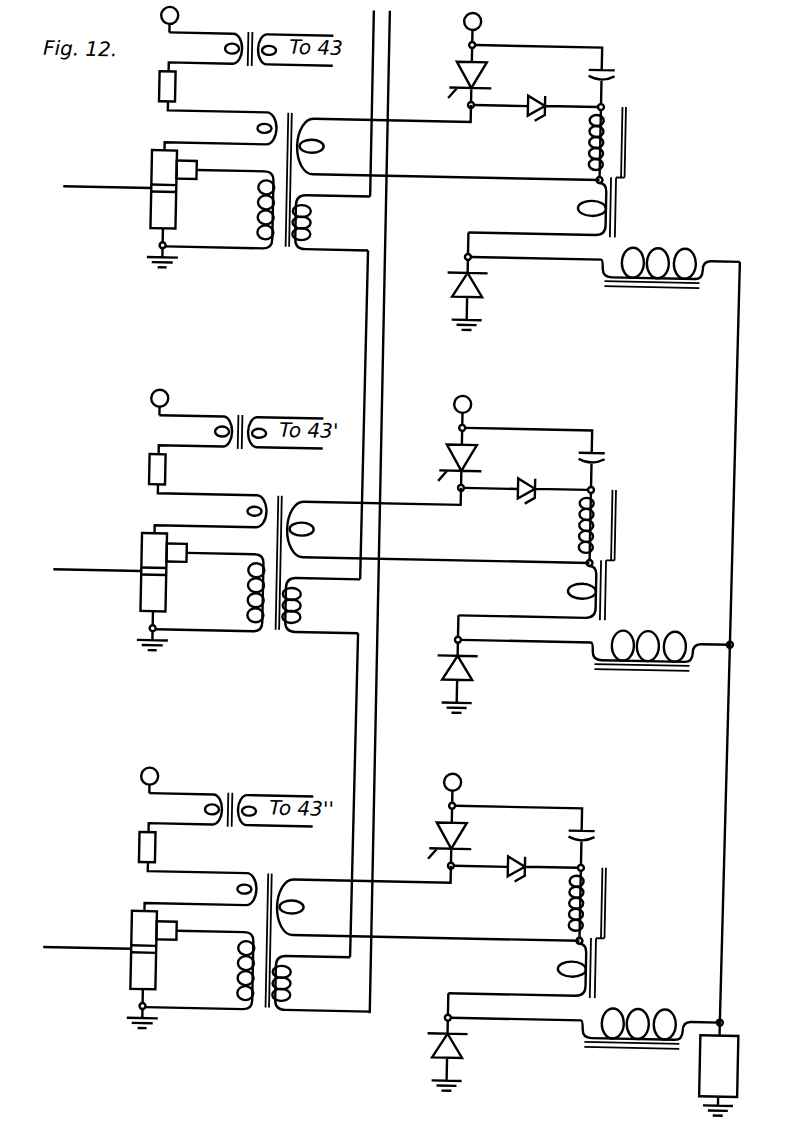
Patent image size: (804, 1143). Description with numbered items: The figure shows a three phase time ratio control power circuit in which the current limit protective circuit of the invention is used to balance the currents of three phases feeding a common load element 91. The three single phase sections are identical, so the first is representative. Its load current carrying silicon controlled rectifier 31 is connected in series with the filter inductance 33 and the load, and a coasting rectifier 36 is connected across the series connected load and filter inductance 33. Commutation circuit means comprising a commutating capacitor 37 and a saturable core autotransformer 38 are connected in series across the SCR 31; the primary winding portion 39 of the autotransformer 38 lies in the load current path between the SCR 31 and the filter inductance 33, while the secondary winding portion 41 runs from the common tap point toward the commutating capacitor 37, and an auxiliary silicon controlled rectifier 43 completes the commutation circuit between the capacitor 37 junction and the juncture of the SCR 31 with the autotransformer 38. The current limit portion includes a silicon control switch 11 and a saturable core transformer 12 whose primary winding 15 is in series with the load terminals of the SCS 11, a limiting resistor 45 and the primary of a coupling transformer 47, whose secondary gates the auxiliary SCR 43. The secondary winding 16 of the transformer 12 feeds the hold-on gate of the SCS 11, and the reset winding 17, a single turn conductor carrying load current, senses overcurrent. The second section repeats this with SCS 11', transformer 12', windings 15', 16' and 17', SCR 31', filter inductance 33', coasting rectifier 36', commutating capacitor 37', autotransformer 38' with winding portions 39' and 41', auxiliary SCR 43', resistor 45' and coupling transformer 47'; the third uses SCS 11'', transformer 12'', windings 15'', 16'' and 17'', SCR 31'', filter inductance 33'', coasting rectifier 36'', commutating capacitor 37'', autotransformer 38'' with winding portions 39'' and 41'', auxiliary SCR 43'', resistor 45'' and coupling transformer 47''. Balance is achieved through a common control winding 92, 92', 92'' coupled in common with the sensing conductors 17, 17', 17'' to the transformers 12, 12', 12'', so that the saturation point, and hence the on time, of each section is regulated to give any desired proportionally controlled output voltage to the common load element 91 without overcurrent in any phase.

The silicon control switch 11 is at (129, 207).
The saturable core transformer 12 is at (291, 164).
The primary winding 15 is at (221, 126).
The secondary winding 16 is at (220, 208).
The reset winding 17 is at (449, 141).
The load current carrying silicon controlled rectifier 31 is at (485, 61).
The filter inductance 33 is at (605, 253).
The coasting rectifier 36 is at (447, 280).
The commutating capacitor 37 is at (563, 78).
The saturable core autotransformer 38 is at (633, 172).
The primary winding portion 39 is at (537, 207).
The secondary winding portion 41 is at (578, 146).
The auxiliary silicon controlled rectifier 43 is at (535, 120).
The limiting resistor 45 is at (185, 86).
The coupling transformer 47 is at (251, 37).
The common load element 91 is at (759, 1042).
The common control winding 92 is at (331, 223).
The silicon control switch 11' is at (119, 590).
The saturable core transformer 12' is at (283, 547).
The primary winding 15' is at (211, 509).
The secondary winding 16' is at (210, 591).
The overcurrent sensing conductor 17' is at (439, 523).
The load current carrying silicon controlled rectifier 31' is at (478, 443).
The filter inductance 33' is at (596, 635).
The coasting rectifier 36' is at (437, 663).
The commutating capacitor 37' is at (555, 461).
The saturable core autotransformer 38' is at (625, 555).
The primary winding portion 39' is at (527, 590).
The secondary winding portion 41' is at (568, 529).
The auxiliary silicon controlled rectifier 43' is at (525, 502).
The limiting resistor 45' is at (178, 469).
The coupling transformer 47' is at (241, 420).
The common control winding 92' is at (321, 606).
The silicon control switch 11'' is at (109, 968).
The saturable core transformer 12'' is at (276, 924).
The primary winding 15'' is at (200, 887).
The secondary winding 16'' is at (200, 969).
The overcurrent sensing conductor 17'' is at (428, 901).
The load current carrying silicon controlled rectifier 31'' is at (471, 821).
The filter inductance 33'' is at (586, 1013).
The coasting rectifier 36'' is at (466, 1042).
The commutating capacitor 37'' is at (548, 839).
The saturable core autotransformer 38'' is at (618, 934).
The primary winding portion 39'' is at (517, 968).
The secondary winding portion 41'' is at (558, 907).
The auxiliary silicon controlled rectifier 43'' is at (515, 880).
The limiting resistor 45'' is at (170, 847).
The coupling transformer 47'' is at (231, 798).
The common control winding 92'' is at (321, 984).